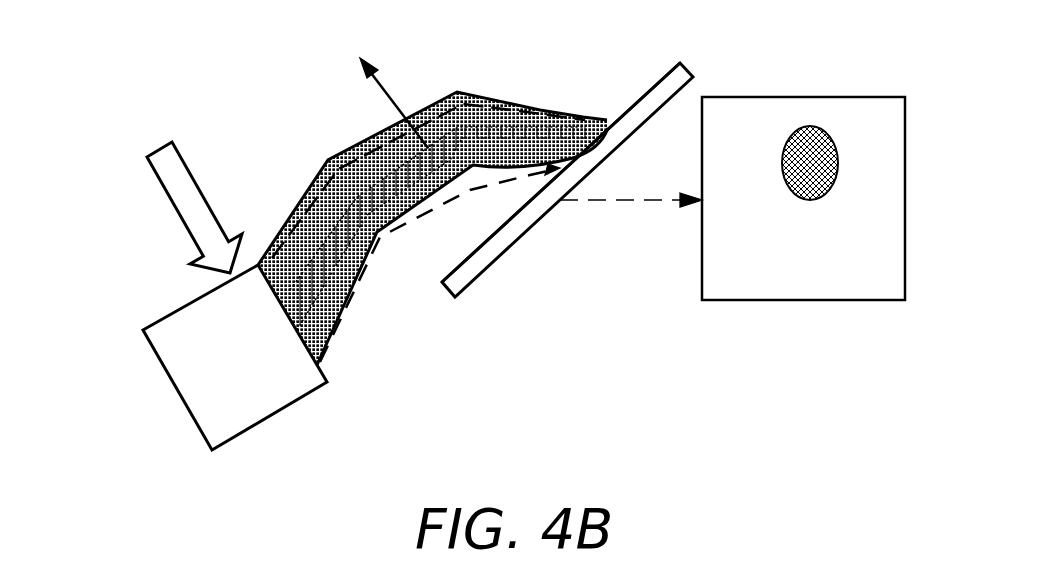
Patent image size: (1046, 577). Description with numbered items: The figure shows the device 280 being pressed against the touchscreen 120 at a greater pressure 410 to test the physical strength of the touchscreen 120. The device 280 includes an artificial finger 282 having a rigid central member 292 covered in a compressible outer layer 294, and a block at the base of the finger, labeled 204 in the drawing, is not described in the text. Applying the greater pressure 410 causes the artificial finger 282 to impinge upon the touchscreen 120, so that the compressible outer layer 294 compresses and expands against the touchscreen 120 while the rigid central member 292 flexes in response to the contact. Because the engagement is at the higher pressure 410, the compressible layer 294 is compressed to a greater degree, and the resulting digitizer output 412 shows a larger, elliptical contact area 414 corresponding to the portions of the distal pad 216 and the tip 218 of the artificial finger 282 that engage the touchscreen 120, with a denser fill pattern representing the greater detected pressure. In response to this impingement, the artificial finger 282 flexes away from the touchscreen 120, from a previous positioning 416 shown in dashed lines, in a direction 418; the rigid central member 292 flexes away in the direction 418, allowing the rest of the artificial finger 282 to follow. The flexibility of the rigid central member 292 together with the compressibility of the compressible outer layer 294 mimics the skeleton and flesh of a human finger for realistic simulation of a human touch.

The device 280 is at (148, 88).
The greater pressure 410 is at (160, 150).
The light source 204 is at (190, 302).
The artificial finger 282 is at (293, 184).
The compressible outer layer 294 is at (377, 137).
The previous positioning 416 is at (512, 113).
The rigid central member 292 is at (477, 123).
The direction 418 is at (372, 135).
The distal pad 216 is at (562, 172).
The touchscreen 120 is at (480, 277).
The tip 218 is at (610, 117).
The digitizer output 412 is at (857, 97).
The elliptical contact area 414 is at (817, 183).